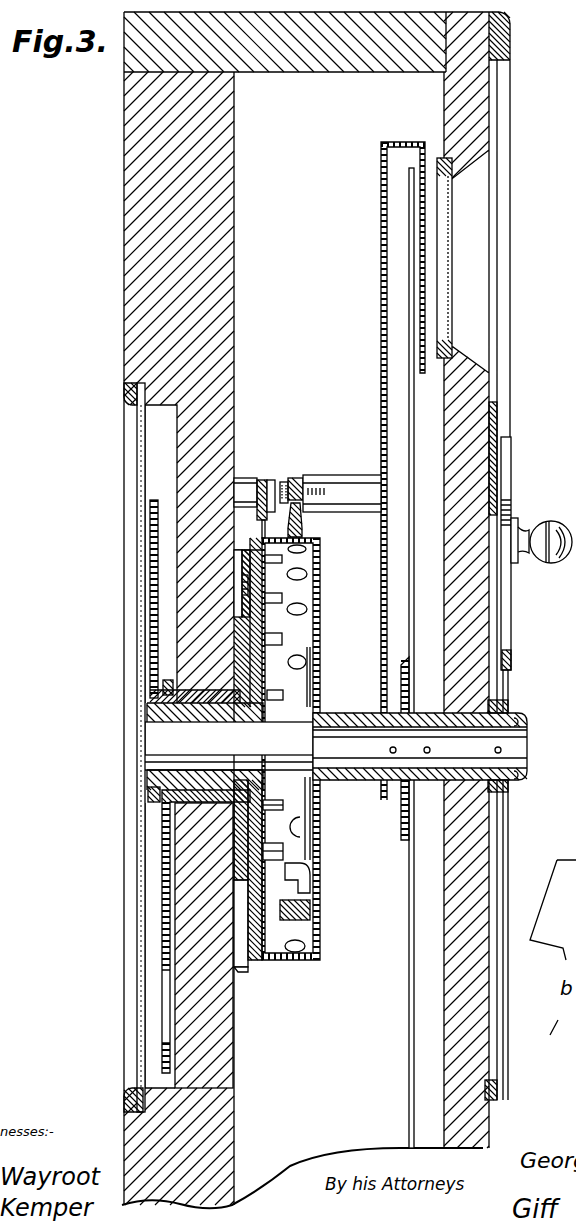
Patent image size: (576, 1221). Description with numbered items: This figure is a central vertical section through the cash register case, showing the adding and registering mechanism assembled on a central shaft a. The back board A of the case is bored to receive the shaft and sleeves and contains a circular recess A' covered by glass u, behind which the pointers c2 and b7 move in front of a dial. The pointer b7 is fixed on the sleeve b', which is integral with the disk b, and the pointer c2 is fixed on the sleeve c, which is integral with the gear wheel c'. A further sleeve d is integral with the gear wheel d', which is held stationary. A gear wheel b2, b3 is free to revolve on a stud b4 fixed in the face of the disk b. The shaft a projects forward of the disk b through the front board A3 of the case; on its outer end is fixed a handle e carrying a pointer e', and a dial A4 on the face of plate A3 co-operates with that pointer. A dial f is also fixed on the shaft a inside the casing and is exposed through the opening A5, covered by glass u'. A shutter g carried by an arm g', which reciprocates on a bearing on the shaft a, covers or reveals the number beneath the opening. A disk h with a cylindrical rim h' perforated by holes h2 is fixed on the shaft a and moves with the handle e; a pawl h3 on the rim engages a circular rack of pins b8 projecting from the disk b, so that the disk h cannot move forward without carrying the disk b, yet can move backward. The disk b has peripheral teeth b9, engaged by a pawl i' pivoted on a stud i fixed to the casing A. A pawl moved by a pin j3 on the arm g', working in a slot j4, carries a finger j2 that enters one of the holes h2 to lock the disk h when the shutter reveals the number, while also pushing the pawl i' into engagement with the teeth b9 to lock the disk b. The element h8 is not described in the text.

The back board A is at (295, 610).
The circular recess A' is at (130, 746).
The front-board A3 is at (490, 403).
The dial A4 is at (505, 1027).
The opening A5 is at (483, 212).
The central shaft a is at (540, 745).
The disk b is at (258, 761).
The sleeve b' is at (180, 749).
The gear wheel b2 is at (237, 556).
The gear wheel b3 is at (248, 552).
The stud b4 is at (250, 582).
The pointer b7 is at (152, 578).
The pins b8 is at (272, 697).
The teeth b9 is at (256, 966).
The sleeve c is at (148, 729).
The gear wheel c' is at (273, 818).
The pointer c2 is at (172, 903).
The sleeve d is at (170, 868).
The gear wheel d' is at (224, 748).
The handle e is at (515, 553).
The pointer e' is at (536, 516).
The dial f is at (407, 658).
The shutter g is at (424, 471).
The arm g' is at (368, 579).
The disk h is at (298, 749).
The cylindrical rim h' is at (286, 754).
The holes h2 is at (308, 607).
The pawl h3 is at (311, 915).
The block h8 is at (277, 852).
The stud i is at (245, 485).
The pawl i' is at (267, 479).
The finger j2 is at (303, 530).
The pin j3 is at (292, 480).
The slot j4 is at (312, 476).
The glass u is at (119, 747).
The glass u' is at (457, 258).